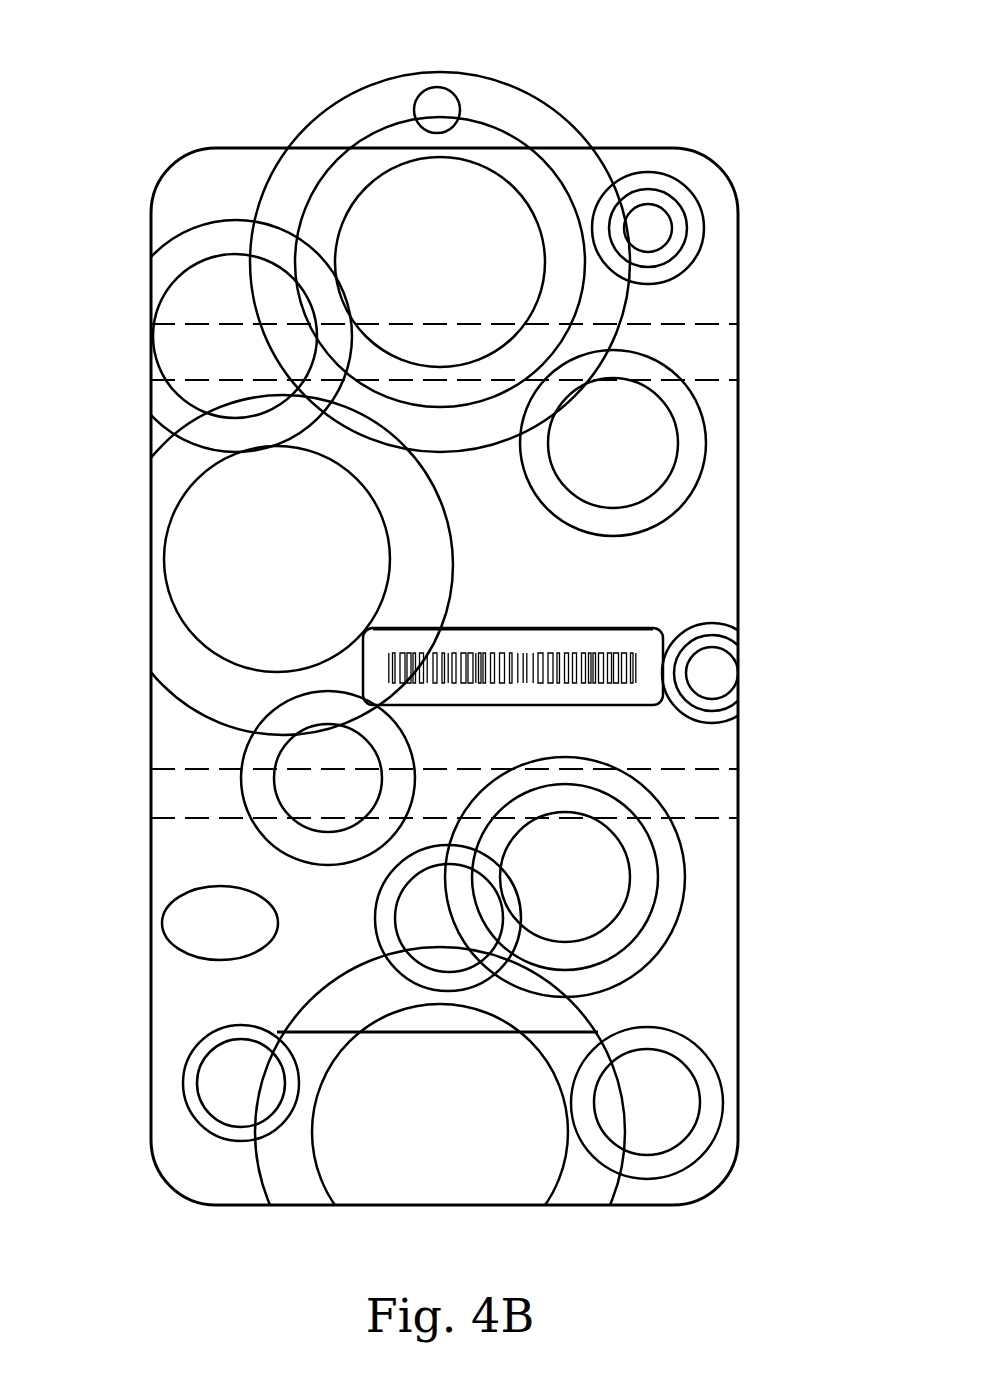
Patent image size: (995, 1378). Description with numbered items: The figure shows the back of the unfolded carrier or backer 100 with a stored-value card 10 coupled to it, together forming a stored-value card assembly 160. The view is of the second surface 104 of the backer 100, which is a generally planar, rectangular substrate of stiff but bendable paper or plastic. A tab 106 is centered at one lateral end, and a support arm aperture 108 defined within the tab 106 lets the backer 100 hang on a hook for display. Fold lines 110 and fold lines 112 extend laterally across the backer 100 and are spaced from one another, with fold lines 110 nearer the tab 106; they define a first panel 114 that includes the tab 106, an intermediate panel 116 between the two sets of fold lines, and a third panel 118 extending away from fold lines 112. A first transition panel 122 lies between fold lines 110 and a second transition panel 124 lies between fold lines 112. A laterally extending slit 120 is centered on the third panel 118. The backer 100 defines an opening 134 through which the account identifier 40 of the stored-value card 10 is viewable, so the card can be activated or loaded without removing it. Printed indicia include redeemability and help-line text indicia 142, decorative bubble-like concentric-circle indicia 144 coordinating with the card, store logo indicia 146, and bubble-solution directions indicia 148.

The stored-value card 10 is at (599, 654).
The account identifier 40 is at (642, 668).
The backer 100 is at (719, 191).
The second surface 104 is at (693, 308).
The tab 106 is at (528, 116).
The support arm aperture 108 is at (438, 102).
The fold lines 110 is at (693, 325).
The fold lines 112 is at (691, 772).
The first panel 114 is at (190, 207).
The intermediate panel 116 is at (178, 656).
The third panel 118 is at (218, 988).
The slit 120 is at (397, 1033).
The first transition panel 122 is at (151, 366).
The second transition panel 124 is at (178, 793).
The opening 134 is at (680, 650).
The indicia 142 is at (667, 547).
The decorative indicia 144 is at (673, 941).
The indicia 146 is at (190, 889).
The indicia 148 is at (191, 553).
The stored-value card assembly 160 is at (714, 96).